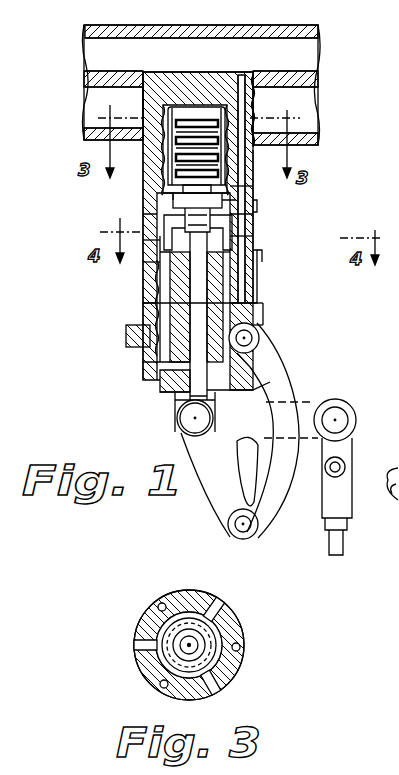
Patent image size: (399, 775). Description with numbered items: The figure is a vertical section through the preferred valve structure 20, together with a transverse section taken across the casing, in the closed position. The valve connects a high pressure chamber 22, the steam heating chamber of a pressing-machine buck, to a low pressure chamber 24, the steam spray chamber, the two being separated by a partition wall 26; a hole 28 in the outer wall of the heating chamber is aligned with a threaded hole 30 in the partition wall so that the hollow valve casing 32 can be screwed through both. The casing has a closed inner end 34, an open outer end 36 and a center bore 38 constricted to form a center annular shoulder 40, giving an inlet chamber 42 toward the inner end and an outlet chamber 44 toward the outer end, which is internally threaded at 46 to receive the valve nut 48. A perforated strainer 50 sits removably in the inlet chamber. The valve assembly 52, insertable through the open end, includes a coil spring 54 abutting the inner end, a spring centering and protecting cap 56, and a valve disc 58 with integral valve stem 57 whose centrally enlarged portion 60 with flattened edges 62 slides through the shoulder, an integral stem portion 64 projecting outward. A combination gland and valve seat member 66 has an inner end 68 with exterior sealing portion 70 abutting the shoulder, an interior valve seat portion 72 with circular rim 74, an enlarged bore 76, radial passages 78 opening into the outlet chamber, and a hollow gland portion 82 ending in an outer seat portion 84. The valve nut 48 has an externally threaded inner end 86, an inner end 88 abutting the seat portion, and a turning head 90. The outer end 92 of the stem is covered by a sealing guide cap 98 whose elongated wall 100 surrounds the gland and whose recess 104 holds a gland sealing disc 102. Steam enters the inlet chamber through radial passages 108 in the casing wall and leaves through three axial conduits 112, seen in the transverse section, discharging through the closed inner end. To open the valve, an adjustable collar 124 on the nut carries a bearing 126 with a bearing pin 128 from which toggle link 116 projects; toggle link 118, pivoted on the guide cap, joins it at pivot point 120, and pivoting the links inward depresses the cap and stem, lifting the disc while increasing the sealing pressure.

In FIG. 1, the valve structure 20 is at (256, 214).
In FIG. 1, the high pressure chamber 22 is at (90, 118).
In FIG. 1, the low pressure chamber 24 is at (90, 52).
In FIG. 1, the partition wall 26 is at (318, 82).
In FIG. 1, the hole 28 is at (270, 147).
In FIG. 1, the threaded hole 30 is at (266, 72).
In FIG. 1, the valve casing 32 is at (141, 295).
In FIG. 3, the valve casing 32 is at (237, 622).
In FIG. 1, the closed inner end 34 is at (181, 75).
In FIG. 1, the open outer end 36 is at (264, 328).
In FIG. 1, the center bore 38 is at (165, 200).
In FIG. 1, the center annular shoulder 40 is at (186, 230).
In FIG. 1, the inlet chamber 42 is at (166, 135).
In FIG. 3, the inlet chamber 42 is at (220, 652).
In FIG. 1, the outlet chamber 44 is at (264, 262).
In FIG. 1, the internal threads 46 is at (264, 310).
In FIG. 1, the valve nut 48 is at (165, 375).
In FIG. 1, the perforated strainer 50 is at (244, 113).
In FIG. 1, the valve assembly 52 is at (152, 318).
In FIG. 1, the coil spring 54 is at (166, 112).
In FIG. 1, the spring centering and protecting cap 56 is at (256, 188).
In FIG. 1, the valve stem 57 is at (176, 396).
In FIG. 1, the valve disc 58 is at (234, 195).
In FIG. 1, the centrally enlarged portion 60 is at (256, 236).
In FIG. 1, the flattened edges 62 is at (152, 242).
In FIG. 1, the stem portion 64 is at (178, 402).
In FIG. 1, the combination gland and valve seat member 66 is at (190, 358).
In FIG. 1, the inner end 68 is at (141, 262).
In FIG. 1, the exterior sealing portion 70 is at (141, 238).
In FIG. 1, the interior valve seat portion 72 is at (164, 212).
In FIG. 1, the circular rim 74 is at (300, 205).
In FIG. 1, the enlarged bore 76 is at (226, 227).
In FIG. 1, the radial passages 78 is at (166, 270).
In FIG. 1, the gland portion 82 is at (170, 300).
In FIG. 1, the outer seat portion 84 is at (287, 388).
In FIG. 1, the externally threaded inner end 86 is at (266, 312).
In FIG. 1, the inner end 88 is at (258, 258).
In FIG. 1, the turning head 90 is at (178, 390).
In FIG. 1, the outer end 92 is at (174, 410).
In FIG. 1, the sealing guide cap 98 is at (160, 368).
In FIG. 1, the elongated wall 100 is at (276, 372).
In FIG. 1, the gland sealing disc 102 is at (214, 420).
In FIG. 1, the recess 104 is at (292, 402).
In FIG. 1, the radial passages 108 is at (160, 118).
In FIG. 3, the radial passages 108 is at (210, 602).
In FIG. 1, the axial conduits 112 is at (242, 110).
In FIG. 3, the axial conduits 112 is at (162, 604).
In FIG. 1, the toggle link 116 is at (272, 510).
In FIG. 1, the toggle link 118 is at (220, 486).
In FIG. 1, the pivot point 120 is at (228, 524).
In FIG. 1, the adjustable collar 124 is at (126, 333).
In FIG. 1, the bearing 126 is at (260, 336).
In FIG. 1, the bearing pin 128 is at (262, 348).